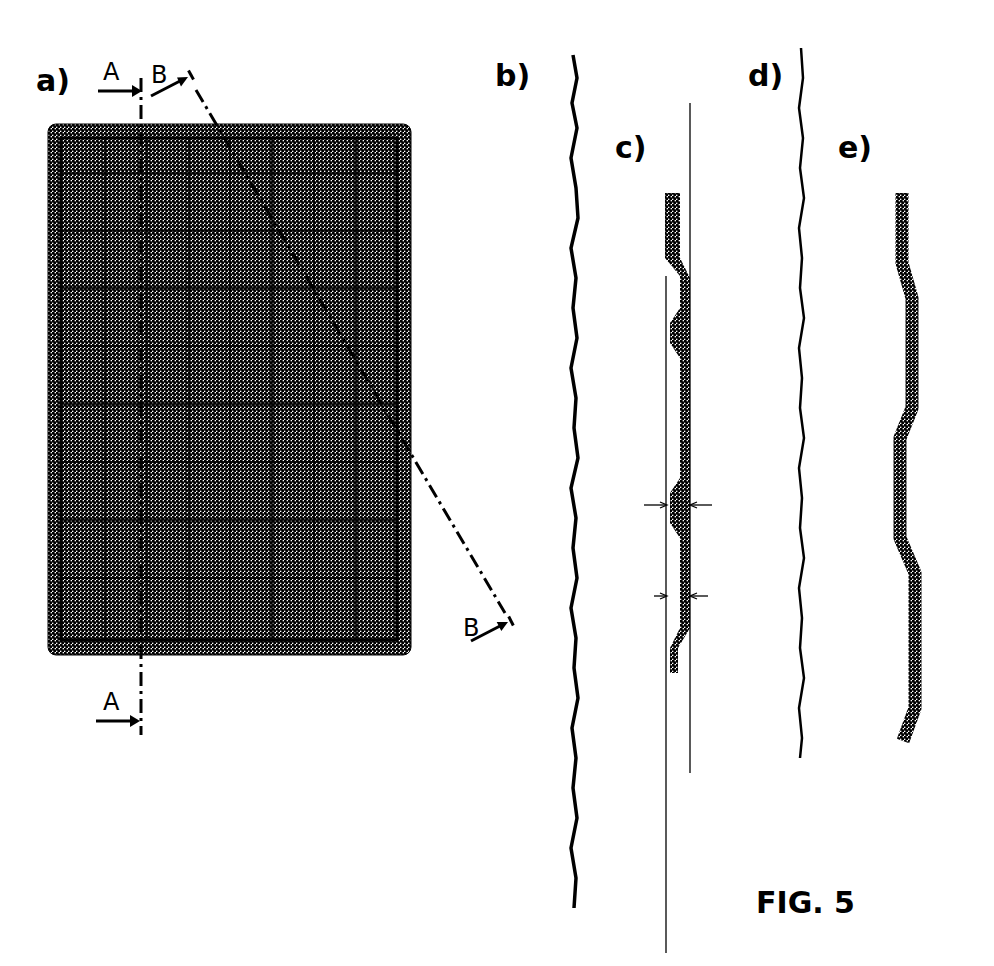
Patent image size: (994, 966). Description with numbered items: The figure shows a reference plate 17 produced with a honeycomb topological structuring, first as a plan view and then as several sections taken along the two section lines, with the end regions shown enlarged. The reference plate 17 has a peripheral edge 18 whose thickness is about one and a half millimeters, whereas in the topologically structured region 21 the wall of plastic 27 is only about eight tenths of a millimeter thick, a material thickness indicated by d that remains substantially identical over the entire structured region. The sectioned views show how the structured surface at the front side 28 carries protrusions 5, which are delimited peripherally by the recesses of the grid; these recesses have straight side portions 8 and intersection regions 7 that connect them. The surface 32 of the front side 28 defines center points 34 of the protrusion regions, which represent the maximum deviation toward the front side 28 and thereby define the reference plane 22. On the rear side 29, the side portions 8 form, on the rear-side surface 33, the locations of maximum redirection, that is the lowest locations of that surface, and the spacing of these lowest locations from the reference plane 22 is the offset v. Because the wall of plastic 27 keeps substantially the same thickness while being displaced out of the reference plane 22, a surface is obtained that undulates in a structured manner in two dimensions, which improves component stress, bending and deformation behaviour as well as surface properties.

The protrusion region 5 is at (740, 500).
The intersection region 7 is at (891, 432).
The side portion 8 is at (740, 500).
The reference plate 17 is at (229, 466).
The peripheral edge 18 is at (502, 488).
The topologically structured region 21 is at (201, 648).
The reference plane 22 is at (683, 745).
The wall of plastic 27 is at (700, 573).
The front side 28 is at (572, 481).
The rear side 29 is at (572, 481).
The surface of the front side 32 is at (700, 573).
The rear-side surface 33 is at (700, 573).
The center point 34 is at (676, 577).